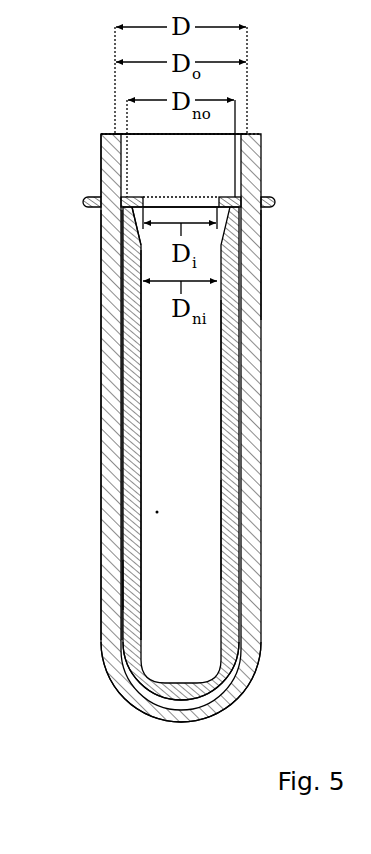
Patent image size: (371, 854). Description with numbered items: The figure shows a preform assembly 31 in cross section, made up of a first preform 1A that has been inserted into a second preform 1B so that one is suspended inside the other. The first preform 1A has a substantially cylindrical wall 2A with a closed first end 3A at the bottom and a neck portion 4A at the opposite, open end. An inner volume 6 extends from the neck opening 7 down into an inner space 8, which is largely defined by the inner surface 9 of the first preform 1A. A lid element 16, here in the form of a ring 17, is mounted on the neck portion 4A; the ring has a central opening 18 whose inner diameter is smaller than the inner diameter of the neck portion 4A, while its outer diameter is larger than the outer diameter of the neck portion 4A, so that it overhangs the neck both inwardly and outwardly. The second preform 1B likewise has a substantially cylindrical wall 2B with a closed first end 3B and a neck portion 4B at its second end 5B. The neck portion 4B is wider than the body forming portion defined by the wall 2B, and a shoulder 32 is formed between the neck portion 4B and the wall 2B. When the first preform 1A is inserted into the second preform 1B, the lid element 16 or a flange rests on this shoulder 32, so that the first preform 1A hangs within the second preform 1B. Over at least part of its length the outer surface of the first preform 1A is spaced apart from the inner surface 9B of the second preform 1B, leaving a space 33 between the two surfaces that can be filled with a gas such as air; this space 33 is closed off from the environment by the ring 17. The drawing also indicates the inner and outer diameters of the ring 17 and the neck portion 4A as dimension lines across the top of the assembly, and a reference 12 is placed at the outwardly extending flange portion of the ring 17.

The first preform 1A is at (115, 443).
The second preform 1B is at (100, 297).
The substantially cylindrical wall 2A is at (137, 469).
The substantially cylindrical wall 2B is at (112, 328).
The closed first end 3A is at (140, 691).
The closed first end 3B is at (120, 676).
The neck portion 4A is at (124, 229).
The neck portion 4B is at (100, 178).
The second end 5B is at (92, 118).
The inner volume 6 is at (175, 378).
The neck opening 7 is at (181, 178).
The inner space 8 is at (156, 513).
The inner surface 9 is at (219, 531).
The inner surface 9B is at (119, 586).
The outer flange 12 is at (86, 203).
The lid element 16 is at (270, 197).
The ring 17 is at (131, 196).
The central opening 18 is at (201, 202).
The preform assembly 31 is at (92, 146).
The shoulder 32 is at (258, 229).
The space 33 is at (122, 381).